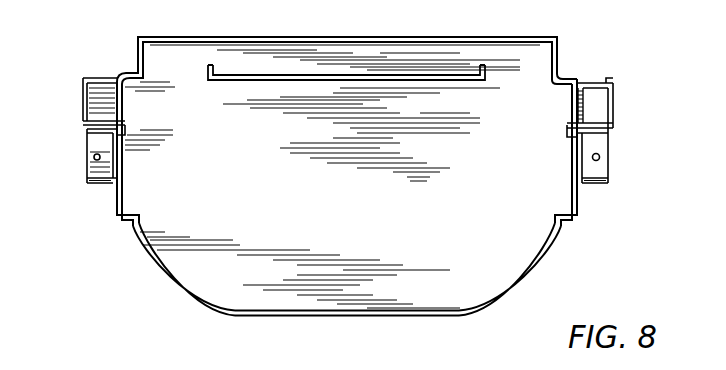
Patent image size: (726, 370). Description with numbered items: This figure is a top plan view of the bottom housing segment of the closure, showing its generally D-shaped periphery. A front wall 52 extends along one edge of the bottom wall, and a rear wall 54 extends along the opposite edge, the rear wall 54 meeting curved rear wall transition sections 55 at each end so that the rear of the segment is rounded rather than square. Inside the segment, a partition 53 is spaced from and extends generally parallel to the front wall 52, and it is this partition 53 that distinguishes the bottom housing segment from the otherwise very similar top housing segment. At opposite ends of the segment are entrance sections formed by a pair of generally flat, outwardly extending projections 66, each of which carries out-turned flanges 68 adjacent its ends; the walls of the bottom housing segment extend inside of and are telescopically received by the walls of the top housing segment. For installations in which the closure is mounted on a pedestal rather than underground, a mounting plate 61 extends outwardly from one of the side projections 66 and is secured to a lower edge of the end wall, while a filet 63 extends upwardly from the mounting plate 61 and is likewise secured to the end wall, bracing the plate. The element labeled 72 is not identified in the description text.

The front wall 52 is at (343, 37).
The partition 53 is at (225, 82).
The rear wall 54 is at (355, 317).
The curved rear wall transition sections 55 is at (158, 282).
The mounting plate 61 is at (88, 176).
The filet 63 is at (100, 180).
The projections 66 is at (589, 78).
The out-turned flanges 68 is at (613, 80).
The flange 72 is at (78, 104).